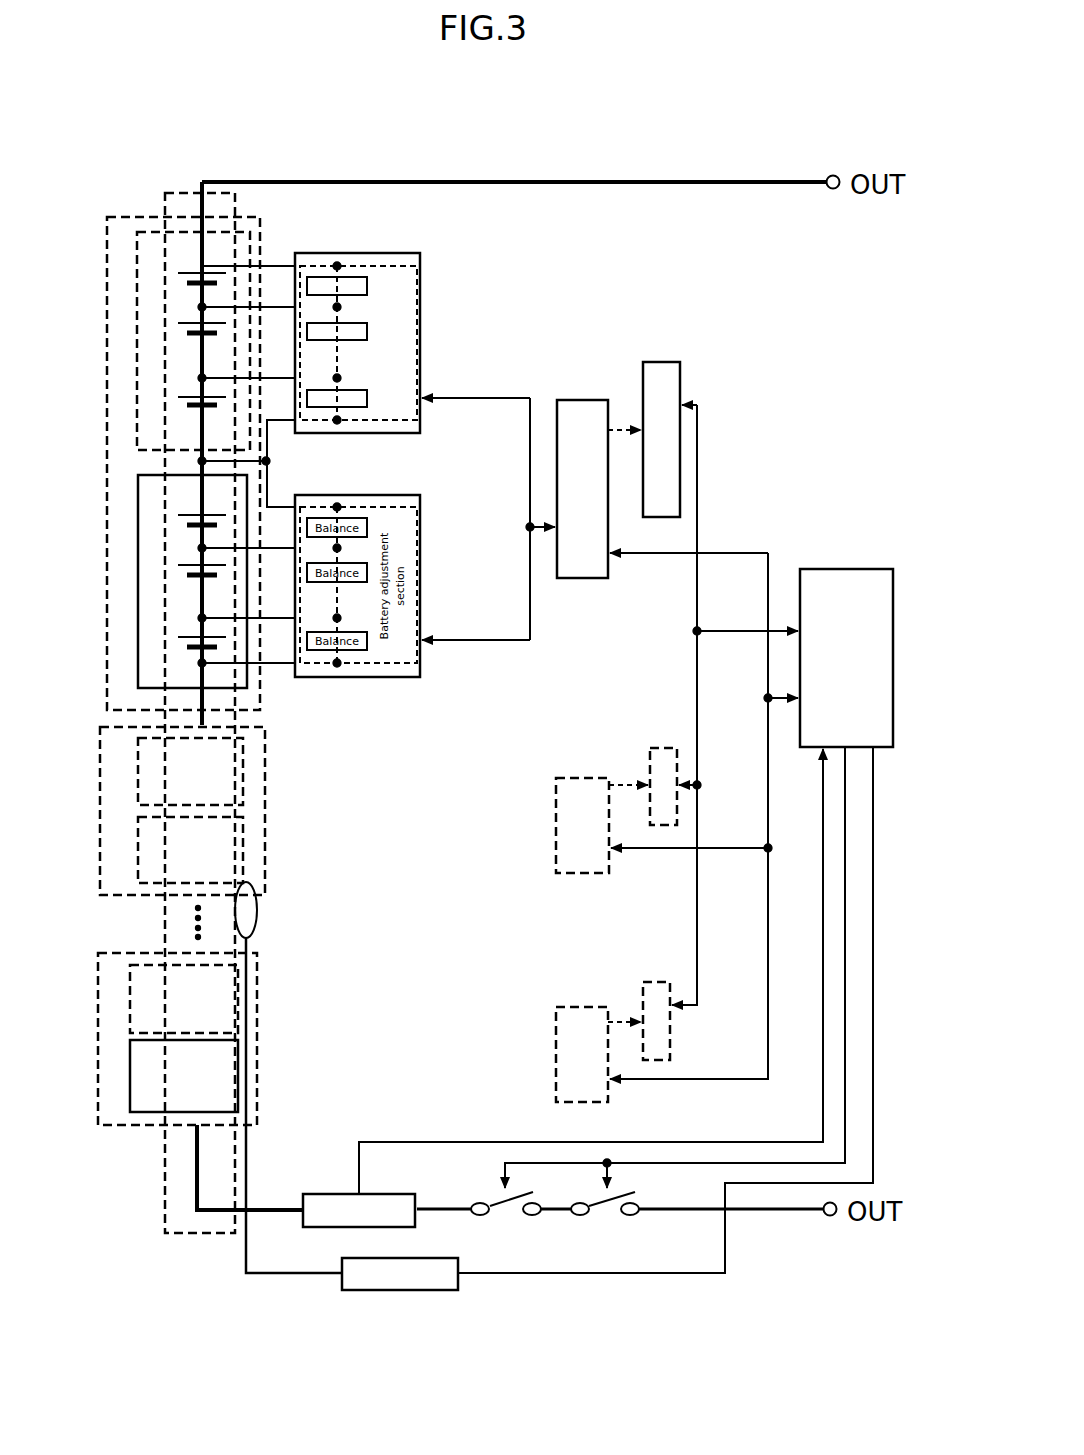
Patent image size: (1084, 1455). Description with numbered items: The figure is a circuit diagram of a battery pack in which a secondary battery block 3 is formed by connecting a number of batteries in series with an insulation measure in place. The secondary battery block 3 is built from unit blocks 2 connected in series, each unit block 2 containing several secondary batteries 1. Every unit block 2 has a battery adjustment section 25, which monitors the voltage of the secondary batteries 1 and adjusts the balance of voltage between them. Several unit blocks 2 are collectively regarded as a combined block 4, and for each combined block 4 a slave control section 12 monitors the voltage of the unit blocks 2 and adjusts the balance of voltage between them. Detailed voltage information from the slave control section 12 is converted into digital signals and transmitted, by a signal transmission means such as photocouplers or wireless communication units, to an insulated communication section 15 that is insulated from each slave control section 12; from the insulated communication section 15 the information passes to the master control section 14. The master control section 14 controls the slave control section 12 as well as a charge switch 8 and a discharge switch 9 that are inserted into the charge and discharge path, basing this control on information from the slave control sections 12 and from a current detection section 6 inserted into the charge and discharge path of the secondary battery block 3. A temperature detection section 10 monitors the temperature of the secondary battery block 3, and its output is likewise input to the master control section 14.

The secondary battery 1 is at (192, 272).
The unit block 2 is at (242, 232).
The secondary battery block 3 is at (217, 192).
The combined block 4 is at (263, 237).
The battery adjustment section 25 is at (405, 252).
The slave control section 12 is at (582, 580).
The insulated communication section 15 is at (665, 361).
The master control section 14 is at (848, 567).
The current detection section 6 is at (322, 1228).
The temperature detection section 10 is at (365, 1290).
The discharge switch 9 is at (505, 1228).
The charge switch 8 is at (605, 1223).